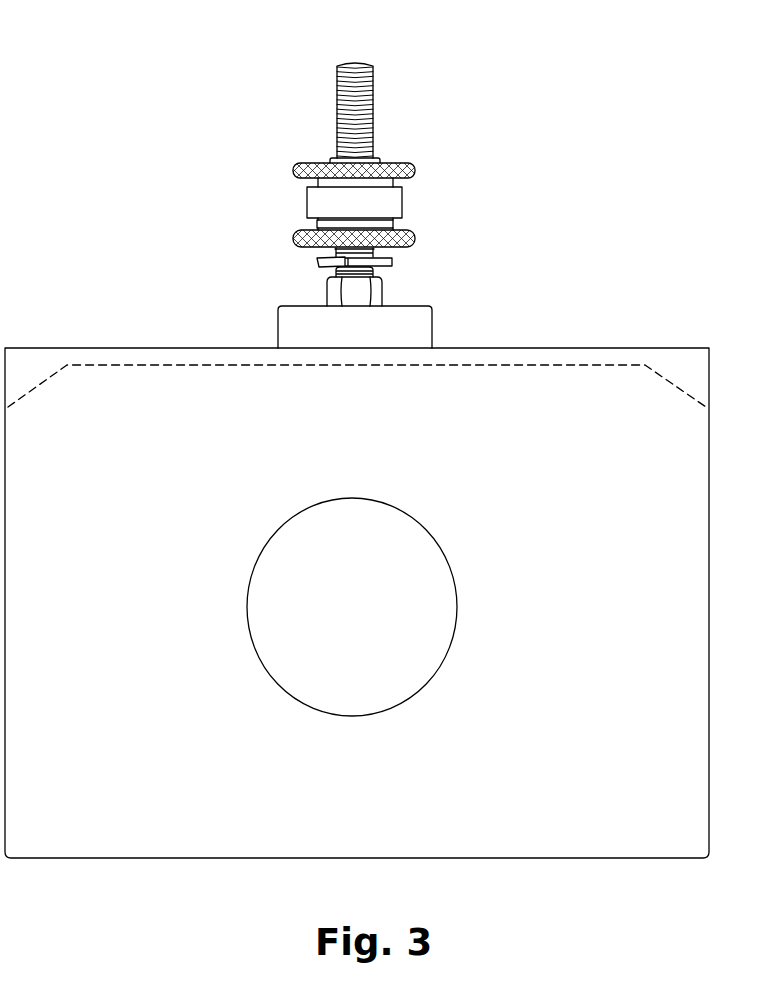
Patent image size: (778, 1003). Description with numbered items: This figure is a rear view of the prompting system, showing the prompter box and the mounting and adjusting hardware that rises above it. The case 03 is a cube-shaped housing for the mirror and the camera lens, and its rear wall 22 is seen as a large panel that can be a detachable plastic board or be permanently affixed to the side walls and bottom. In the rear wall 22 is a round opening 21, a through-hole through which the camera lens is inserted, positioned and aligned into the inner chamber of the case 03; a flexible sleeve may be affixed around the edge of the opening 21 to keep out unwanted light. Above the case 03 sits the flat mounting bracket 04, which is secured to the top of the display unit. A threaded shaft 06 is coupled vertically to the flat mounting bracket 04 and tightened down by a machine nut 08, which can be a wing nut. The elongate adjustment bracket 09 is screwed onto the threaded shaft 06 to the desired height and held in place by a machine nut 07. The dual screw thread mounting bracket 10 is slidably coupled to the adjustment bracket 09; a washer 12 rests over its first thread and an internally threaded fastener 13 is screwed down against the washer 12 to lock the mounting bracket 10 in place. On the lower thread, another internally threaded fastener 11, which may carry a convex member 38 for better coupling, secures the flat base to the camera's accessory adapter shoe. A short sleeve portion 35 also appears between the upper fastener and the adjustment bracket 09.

The case 03 is at (707, 529).
The flat mounting bracket 04 is at (413, 328).
The threaded shaft 06 is at (358, 72).
The machine nut 07 is at (375, 163).
The machine nut 08 is at (373, 290).
The elongate adjustment bracket 09 is at (388, 200).
The dual screw thread mounting bracket 10 is at (322, 257).
The internally threaded fastener 11 is at (403, 237).
The washer 12 is at (333, 221).
The internally threaded fastener 13 is at (417, 165).
The round opening 21 is at (420, 550).
The rear wall 22 is at (39, 383).
The sleeve portion 35 is at (327, 183).
The convex member 38 is at (385, 223).